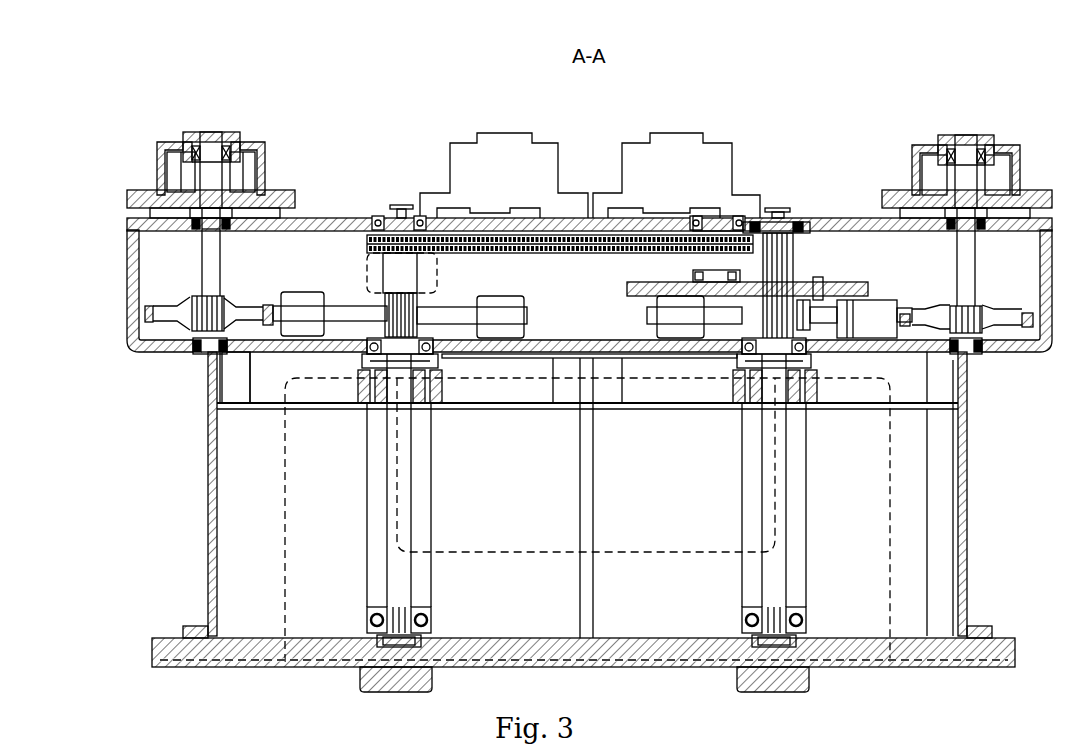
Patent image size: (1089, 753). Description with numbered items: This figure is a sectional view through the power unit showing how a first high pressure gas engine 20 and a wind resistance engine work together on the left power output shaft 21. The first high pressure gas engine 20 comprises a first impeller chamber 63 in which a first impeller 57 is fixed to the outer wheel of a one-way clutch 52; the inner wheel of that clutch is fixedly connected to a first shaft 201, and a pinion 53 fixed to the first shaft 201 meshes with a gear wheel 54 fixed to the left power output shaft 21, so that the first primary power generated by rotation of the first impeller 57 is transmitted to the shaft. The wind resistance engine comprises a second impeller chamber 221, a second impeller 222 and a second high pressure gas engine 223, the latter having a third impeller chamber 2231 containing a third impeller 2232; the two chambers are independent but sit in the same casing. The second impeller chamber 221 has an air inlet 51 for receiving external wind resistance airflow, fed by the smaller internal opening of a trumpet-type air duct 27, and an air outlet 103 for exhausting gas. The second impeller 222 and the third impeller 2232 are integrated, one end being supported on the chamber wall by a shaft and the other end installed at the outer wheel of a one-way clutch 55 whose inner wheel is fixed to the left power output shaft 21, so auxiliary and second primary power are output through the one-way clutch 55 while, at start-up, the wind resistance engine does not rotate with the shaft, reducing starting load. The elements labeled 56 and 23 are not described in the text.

The first shaft 201 is at (157, 192).
The first high pressure gas engine 20 is at (157, 143).
The first impeller 57 is at (173, 160).
The one-way clutch 52 is at (190, 142).
The pinion 53 is at (210, 255).
The first impeller chamber 63 is at (222, 300).
The gear wheel 54 is at (287, 313).
The one-way clutch 55 is at (378, 250).
The left power output shaft 21 is at (402, 265).
The bearing seat 56 is at (705, 222).
The second rotating shaft 23 is at (803, 235).
The third impeller 2232 is at (238, 378).
The third impeller chamber 2231 is at (215, 388).
The second high pressure gas engine 223 is at (505, 434).
The second impeller chamber 221 is at (215, 530).
The second impeller 222 is at (243, 597).
The trumpet-type air duct 27 is at (872, 480).
The air inlet 51 is at (713, 542).
The air outlet 103 is at (658, 647).